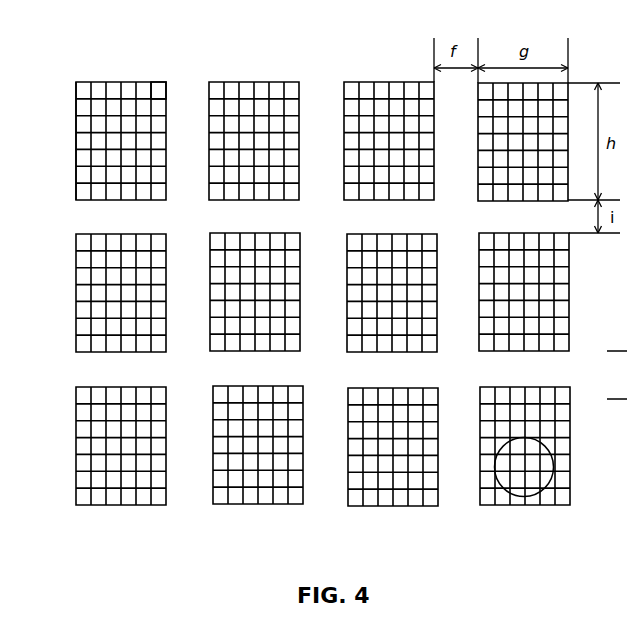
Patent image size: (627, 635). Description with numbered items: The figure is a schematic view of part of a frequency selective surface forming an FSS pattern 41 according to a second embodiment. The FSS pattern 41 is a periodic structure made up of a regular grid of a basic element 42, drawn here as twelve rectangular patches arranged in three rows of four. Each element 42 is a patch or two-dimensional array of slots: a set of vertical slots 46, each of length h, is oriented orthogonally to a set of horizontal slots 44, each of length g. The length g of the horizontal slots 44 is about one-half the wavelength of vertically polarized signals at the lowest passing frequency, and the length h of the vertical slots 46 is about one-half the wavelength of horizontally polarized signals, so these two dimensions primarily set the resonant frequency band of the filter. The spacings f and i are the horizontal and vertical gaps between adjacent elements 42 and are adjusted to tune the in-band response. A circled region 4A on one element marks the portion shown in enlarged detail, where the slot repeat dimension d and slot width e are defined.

The FSS pattern 41 is at (300, 69).
The basic element 42 is at (108, 79).
The horizontal slots 44 is at (160, 82).
The vertical slots 46 is at (75, 127).
The enlarged detail region 4A is at (543, 492).